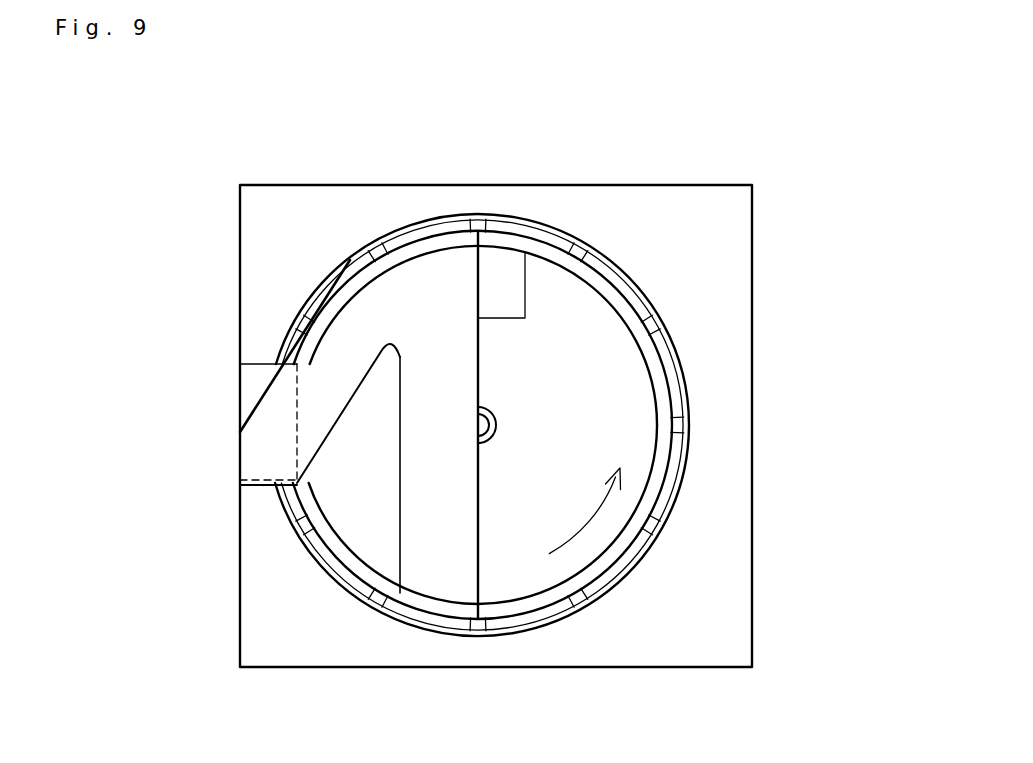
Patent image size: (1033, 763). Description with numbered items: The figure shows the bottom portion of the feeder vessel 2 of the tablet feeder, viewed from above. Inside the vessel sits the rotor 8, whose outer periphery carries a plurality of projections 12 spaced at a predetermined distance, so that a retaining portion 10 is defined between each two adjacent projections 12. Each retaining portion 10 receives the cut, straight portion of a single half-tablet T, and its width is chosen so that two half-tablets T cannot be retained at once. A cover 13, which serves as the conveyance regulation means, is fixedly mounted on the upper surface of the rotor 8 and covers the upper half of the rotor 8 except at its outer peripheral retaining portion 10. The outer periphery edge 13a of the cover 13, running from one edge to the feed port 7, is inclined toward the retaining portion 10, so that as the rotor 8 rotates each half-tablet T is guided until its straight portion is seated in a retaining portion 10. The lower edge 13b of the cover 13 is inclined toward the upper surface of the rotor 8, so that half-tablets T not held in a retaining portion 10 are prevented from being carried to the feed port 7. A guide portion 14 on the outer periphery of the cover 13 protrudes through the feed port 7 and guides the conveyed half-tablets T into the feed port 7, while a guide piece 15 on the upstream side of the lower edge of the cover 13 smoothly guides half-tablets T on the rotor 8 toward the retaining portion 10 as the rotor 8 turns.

The feeder vessel 2 is at (752, 323).
The feed port 7 is at (252, 390).
The rotor 8 is at (602, 417).
The retaining portion 10 is at (340, 268).
The projections 12 is at (378, 245).
The cover 13 is at (372, 395).
The outer periphery edge 13a is at (348, 335).
The lower edge 13b is at (440, 588).
The guide portion 14 is at (247, 468).
The guide piece 15 is at (505, 262).
The half-tablet T is at (440, 235).